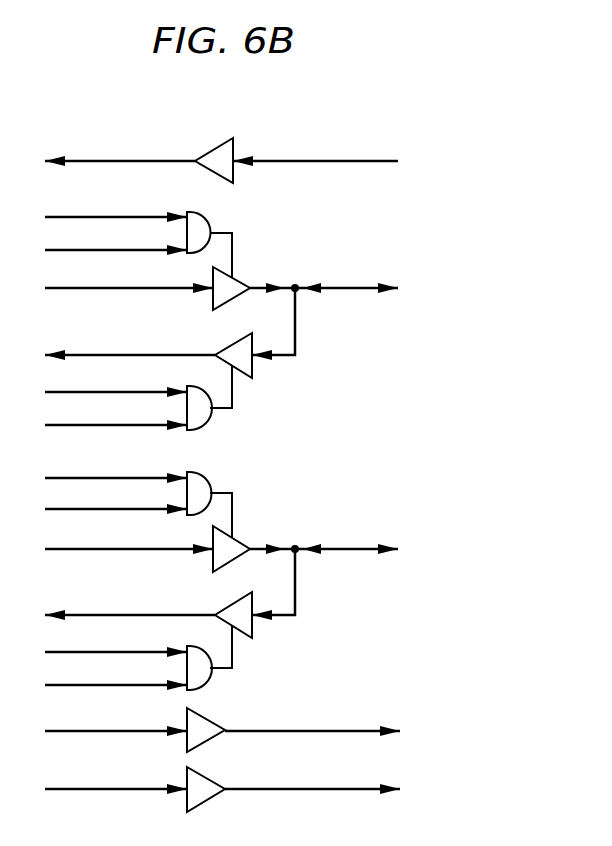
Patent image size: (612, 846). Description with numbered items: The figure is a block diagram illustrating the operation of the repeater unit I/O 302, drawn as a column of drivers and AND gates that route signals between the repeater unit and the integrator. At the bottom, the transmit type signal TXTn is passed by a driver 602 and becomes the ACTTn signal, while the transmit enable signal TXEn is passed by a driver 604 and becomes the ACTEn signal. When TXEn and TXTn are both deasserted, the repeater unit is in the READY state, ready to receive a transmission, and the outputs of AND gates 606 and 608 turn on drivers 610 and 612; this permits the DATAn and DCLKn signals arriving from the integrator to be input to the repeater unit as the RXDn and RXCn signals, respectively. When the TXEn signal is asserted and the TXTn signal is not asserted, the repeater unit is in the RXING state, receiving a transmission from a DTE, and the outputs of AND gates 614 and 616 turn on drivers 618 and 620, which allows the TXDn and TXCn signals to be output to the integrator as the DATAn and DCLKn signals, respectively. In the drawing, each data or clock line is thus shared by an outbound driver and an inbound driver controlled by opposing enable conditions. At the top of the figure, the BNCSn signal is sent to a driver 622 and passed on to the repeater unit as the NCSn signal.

The repeater unit I/O 302 is at (446, 180).
The driver 622 is at (205, 147).
The AND gate 616 is at (205, 215).
The driver 620 is at (240, 282).
The driver 612 is at (240, 343).
The AND gate 608 is at (210, 418).
The AND gate 614 is at (210, 476).
The driver 618 is at (240, 543).
The driver 610 is at (240, 603).
The AND gate 606 is at (212, 678).
The driver 604 is at (212, 722).
The driver 602 is at (212, 782).